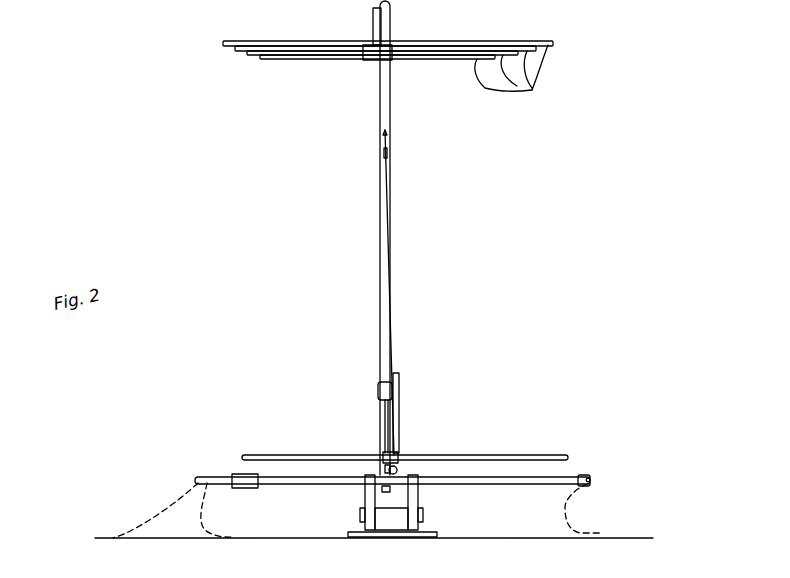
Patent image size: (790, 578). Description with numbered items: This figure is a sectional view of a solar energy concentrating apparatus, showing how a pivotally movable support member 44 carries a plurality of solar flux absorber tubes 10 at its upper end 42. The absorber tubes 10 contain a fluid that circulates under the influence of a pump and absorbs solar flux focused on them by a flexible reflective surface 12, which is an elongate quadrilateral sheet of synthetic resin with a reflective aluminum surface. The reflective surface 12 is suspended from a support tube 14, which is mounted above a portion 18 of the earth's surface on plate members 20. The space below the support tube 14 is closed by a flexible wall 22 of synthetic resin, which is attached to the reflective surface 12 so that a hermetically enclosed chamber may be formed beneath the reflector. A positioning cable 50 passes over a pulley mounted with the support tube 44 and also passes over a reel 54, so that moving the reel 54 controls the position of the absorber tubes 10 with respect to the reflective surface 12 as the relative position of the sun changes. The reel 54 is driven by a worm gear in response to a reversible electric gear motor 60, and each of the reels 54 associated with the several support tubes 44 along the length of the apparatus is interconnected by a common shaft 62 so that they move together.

The solar flux absorber tubes 10 is at (532, 90).
The flexible reflective surface 12 is at (190, 507).
The support tube 14 is at (590, 478).
The portion of the earth's surface 18 is at (630, 533).
The plate members 20 is at (430, 530).
The flexible wall 22 is at (573, 503).
The upper end of support member 42 is at (385, 72).
The pivotally movable support member 44 is at (385, 338).
The positioning cable 50 is at (393, 318).
The reel 54 is at (402, 450).
The reversible electric gear motor 60 is at (382, 468).
The common shaft 62 is at (535, 455).